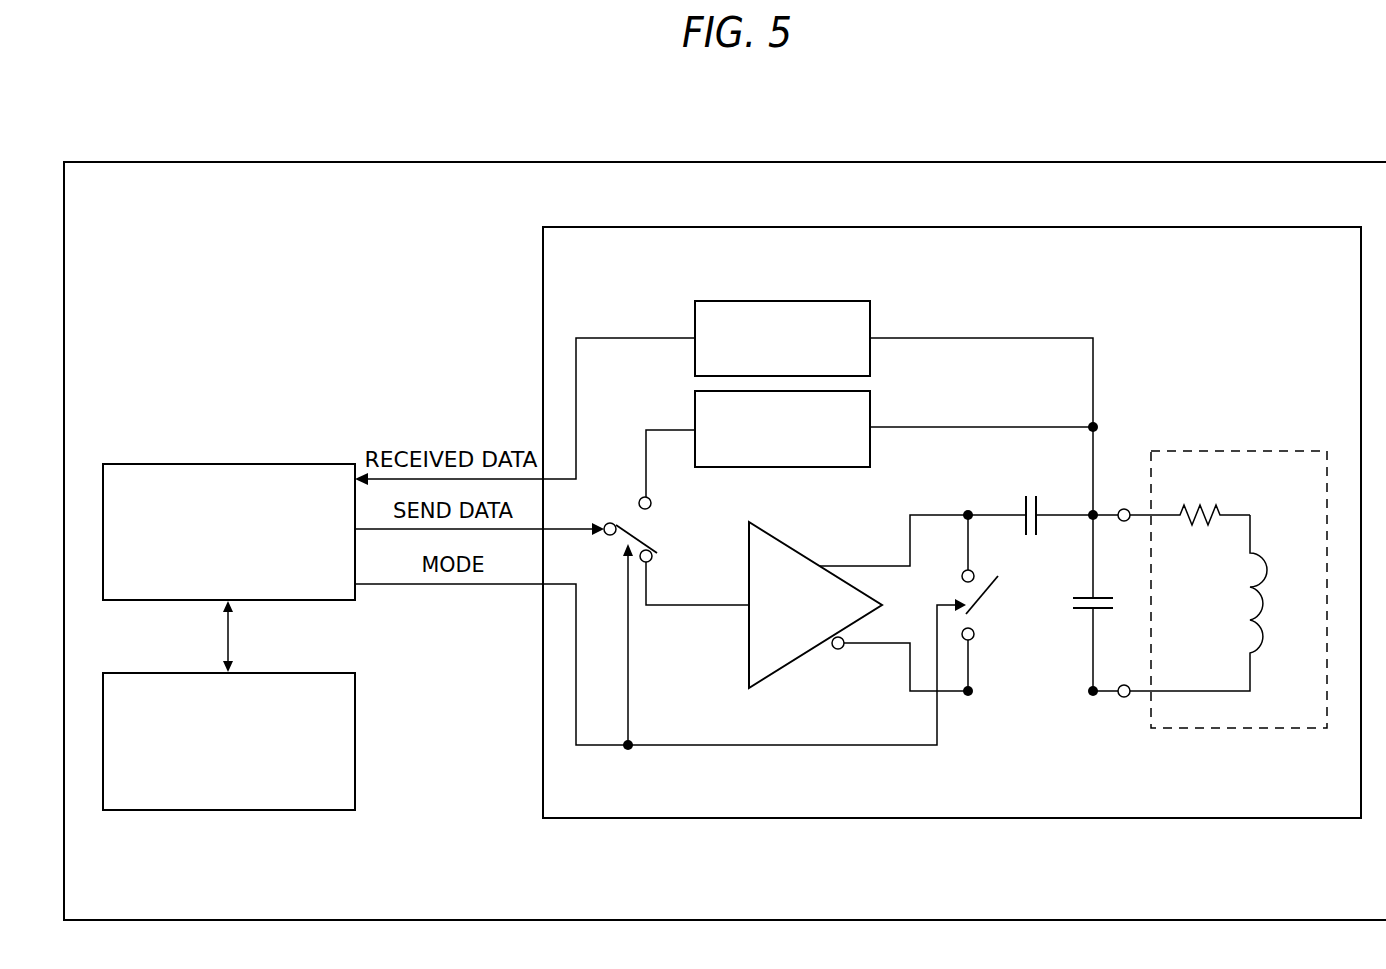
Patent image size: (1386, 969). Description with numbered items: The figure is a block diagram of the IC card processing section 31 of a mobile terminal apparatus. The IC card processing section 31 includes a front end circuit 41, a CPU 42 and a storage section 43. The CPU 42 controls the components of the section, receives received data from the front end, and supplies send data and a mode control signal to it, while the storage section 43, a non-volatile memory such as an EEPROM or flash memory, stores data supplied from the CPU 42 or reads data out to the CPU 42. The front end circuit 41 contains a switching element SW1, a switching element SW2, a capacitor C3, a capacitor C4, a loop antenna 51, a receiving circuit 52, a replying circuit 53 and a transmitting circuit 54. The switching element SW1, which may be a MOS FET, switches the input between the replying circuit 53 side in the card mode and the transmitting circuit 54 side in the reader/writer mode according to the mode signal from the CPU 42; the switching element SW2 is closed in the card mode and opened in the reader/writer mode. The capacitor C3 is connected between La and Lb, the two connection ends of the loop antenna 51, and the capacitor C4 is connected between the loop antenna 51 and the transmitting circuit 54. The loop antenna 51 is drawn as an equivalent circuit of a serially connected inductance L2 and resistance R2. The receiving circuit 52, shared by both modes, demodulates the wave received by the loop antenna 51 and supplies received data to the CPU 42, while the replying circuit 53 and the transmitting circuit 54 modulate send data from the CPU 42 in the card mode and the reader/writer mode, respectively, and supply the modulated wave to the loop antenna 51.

The IC card processing section 31 is at (195, 161).
The front end circuit 41 is at (543, 253).
The CPU 42 is at (229, 463).
The storage section 43 is at (229, 811).
The loop antenna 51 is at (1192, 450).
The receiving circuit 52 is at (871, 321).
The replying circuit 53 is at (871, 411).
The transmitting circuit 54 is at (800, 547).
The switching element SW1 is at (643, 546).
The switching element SW2 is at (977, 614).
The capacitor C3 is at (1105, 597).
The capacitor C4 is at (1035, 538).
The connection end La is at (1124, 508).
The connection end Lb is at (1124, 684).
The resistance R2 is at (1200, 529).
The inductance L2 is at (1268, 560).